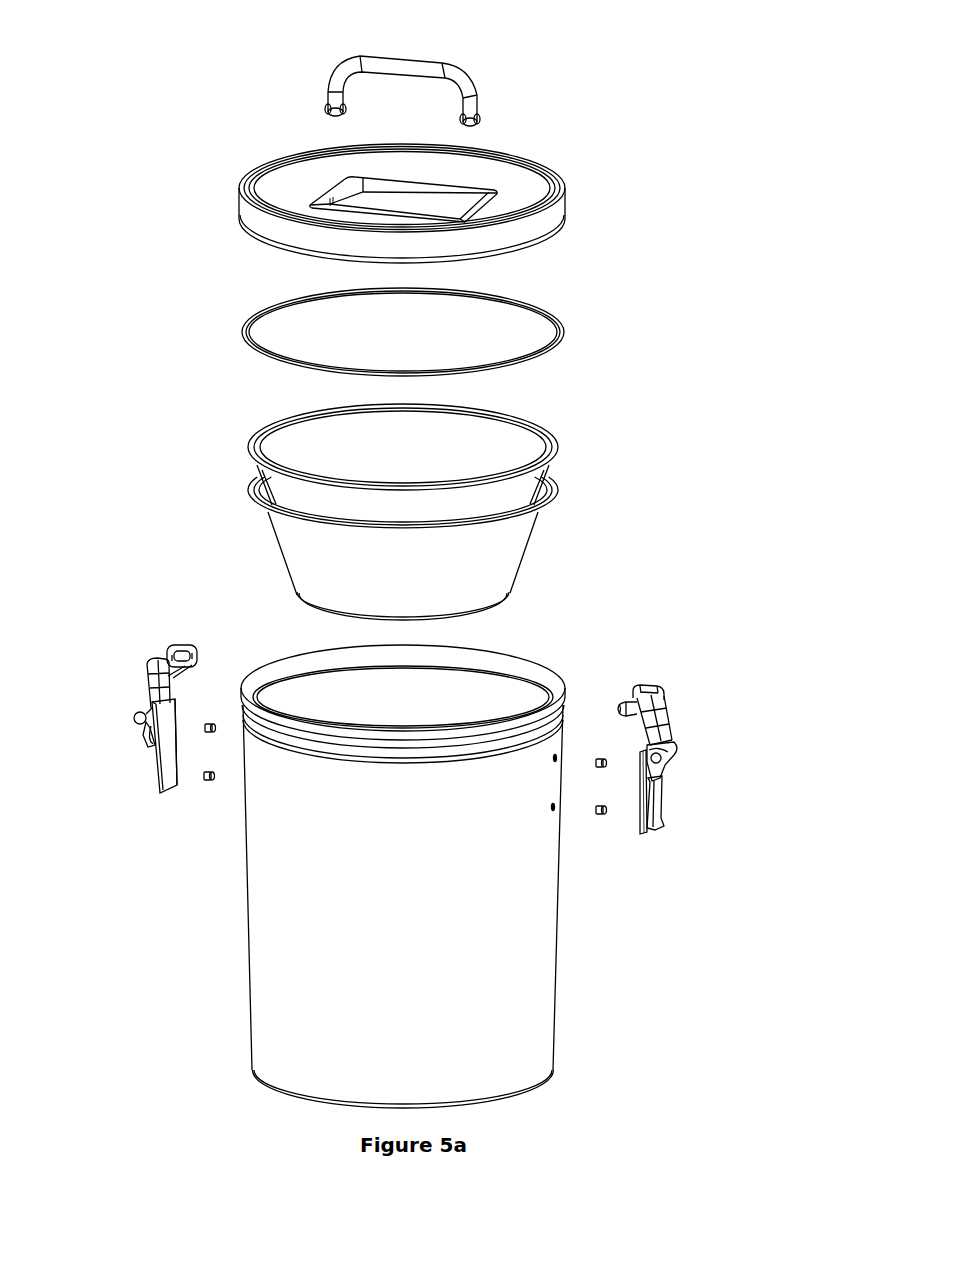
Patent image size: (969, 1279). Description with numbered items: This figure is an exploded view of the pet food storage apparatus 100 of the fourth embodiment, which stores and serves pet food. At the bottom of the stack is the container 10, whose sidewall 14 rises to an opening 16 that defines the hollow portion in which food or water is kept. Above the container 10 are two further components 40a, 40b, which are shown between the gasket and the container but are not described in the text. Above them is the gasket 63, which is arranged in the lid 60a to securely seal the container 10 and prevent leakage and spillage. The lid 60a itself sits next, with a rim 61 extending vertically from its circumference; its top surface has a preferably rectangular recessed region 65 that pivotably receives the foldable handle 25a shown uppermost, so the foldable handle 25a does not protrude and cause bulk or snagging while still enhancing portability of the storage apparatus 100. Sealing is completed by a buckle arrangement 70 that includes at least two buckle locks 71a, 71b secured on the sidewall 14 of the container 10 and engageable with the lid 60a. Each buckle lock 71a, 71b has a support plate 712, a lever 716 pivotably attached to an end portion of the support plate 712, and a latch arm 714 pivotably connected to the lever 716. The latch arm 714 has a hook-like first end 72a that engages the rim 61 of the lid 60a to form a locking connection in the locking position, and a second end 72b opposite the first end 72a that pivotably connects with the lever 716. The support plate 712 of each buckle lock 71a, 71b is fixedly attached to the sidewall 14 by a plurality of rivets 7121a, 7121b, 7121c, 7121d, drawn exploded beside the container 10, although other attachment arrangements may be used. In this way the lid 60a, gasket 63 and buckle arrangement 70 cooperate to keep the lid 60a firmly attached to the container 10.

The storage apparatus 100 is at (263, 107).
The foldable handle 25a is at (470, 70).
The lid 60a is at (415, 191).
The rim 61 is at (250, 185).
The recessed region 65 is at (440, 205).
The gasket 63 is at (565, 330).
The inner bowl 40b is at (263, 483).
The outer bowl 40a is at (520, 580).
The container 10 is at (383, 849).
The sidewall 14 is at (557, 1010).
The opening 16 is at (387, 708).
The rivet 7121a is at (601, 757).
The rivet 7121b is at (607, 817).
The rivet 7121c is at (213, 783).
The rivet 7121d is at (210, 722).
The buckle arrangement 70 is at (657, 620).
The buckle lock 71a is at (700, 645).
The buckle lock 71b is at (165, 640).
The first end 72a is at (130, 653).
The second end 72b is at (137, 740).
The latch arm 714 is at (143, 693).
The lever 716 is at (160, 793).
The support plate 712 is at (645, 835).